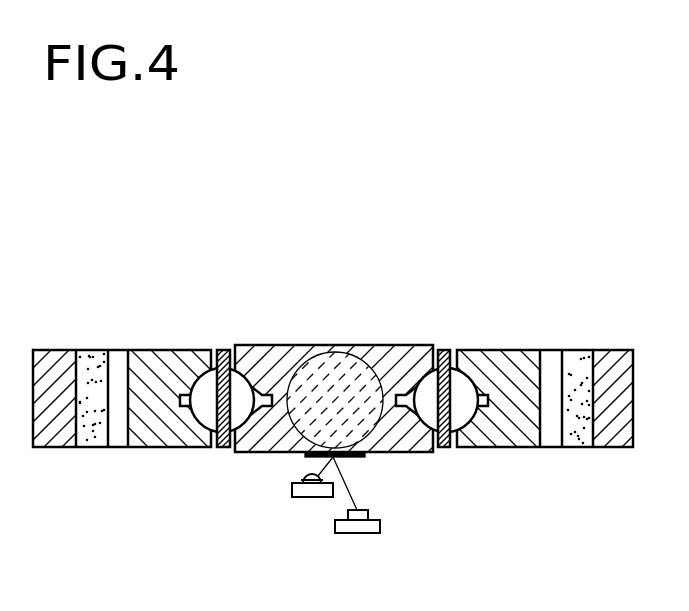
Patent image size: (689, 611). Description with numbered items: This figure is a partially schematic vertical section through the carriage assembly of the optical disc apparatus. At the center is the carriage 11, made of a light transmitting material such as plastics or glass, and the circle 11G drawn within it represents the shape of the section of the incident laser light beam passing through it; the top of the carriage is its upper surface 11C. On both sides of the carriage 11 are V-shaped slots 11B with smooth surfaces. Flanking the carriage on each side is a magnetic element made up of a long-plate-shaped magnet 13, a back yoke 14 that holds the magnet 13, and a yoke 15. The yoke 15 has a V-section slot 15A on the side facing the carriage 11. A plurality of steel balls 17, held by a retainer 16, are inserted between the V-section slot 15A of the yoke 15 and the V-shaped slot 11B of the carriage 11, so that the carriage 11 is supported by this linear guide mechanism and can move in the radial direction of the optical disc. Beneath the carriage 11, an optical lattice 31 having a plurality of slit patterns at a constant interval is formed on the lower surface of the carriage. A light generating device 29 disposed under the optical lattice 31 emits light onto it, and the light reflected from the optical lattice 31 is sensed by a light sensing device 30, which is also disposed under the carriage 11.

The carriage 11 is at (298, 345).
The V-shaped slot 11B is at (248, 345).
The upper surface 11C is at (326, 345).
The circle 11G is at (375, 345).
The magnet 13 is at (92, 352).
The back yoke 14 is at (57, 352).
The yoke 15 is at (170, 352).
The V-section slot 15A is at (198, 425).
The retainer 16 is at (222, 352).
The steel ball 17 is at (252, 448).
The light generating device 29 is at (368, 533).
The light sensing device 30 is at (295, 497).
The optical lattice 31 is at (360, 458).